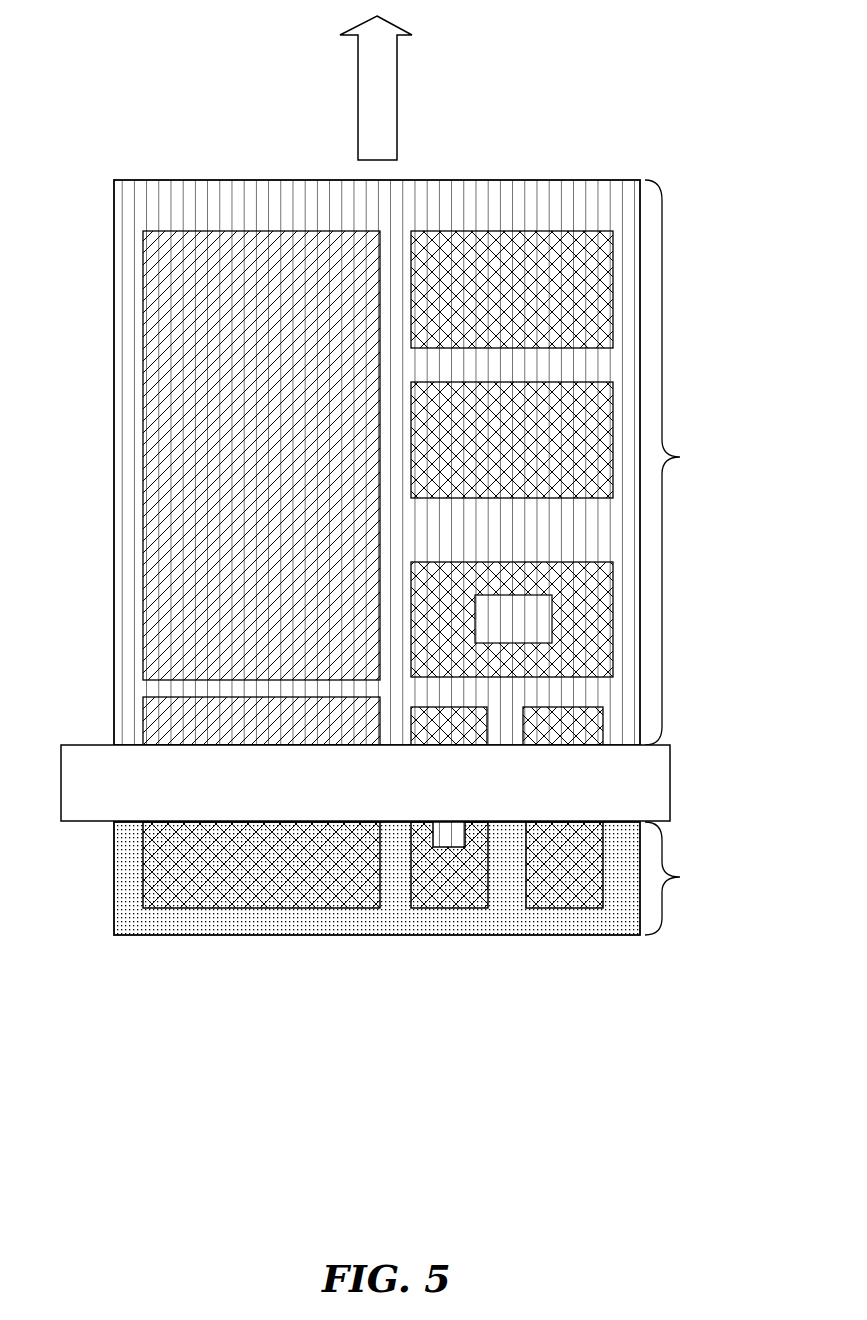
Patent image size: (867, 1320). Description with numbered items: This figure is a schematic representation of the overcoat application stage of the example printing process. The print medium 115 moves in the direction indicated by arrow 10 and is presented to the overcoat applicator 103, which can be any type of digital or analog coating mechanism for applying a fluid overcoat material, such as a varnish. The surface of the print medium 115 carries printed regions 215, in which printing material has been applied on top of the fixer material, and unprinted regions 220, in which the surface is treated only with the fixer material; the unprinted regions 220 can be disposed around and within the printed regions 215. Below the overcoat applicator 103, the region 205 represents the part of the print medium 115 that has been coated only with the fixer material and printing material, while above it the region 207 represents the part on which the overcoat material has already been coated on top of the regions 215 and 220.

The arrow 10 is at (358, 91).
The print medium 115 is at (133, 181).
The printed regions 215 is at (275, 274).
The unprinted regions 220 is at (270, 198).
The region coated with overcoat material 207 is at (682, 462).
The overcoat applicator 103 is at (80, 745).
The region coated with fixer and printing material 205 is at (416, 878).